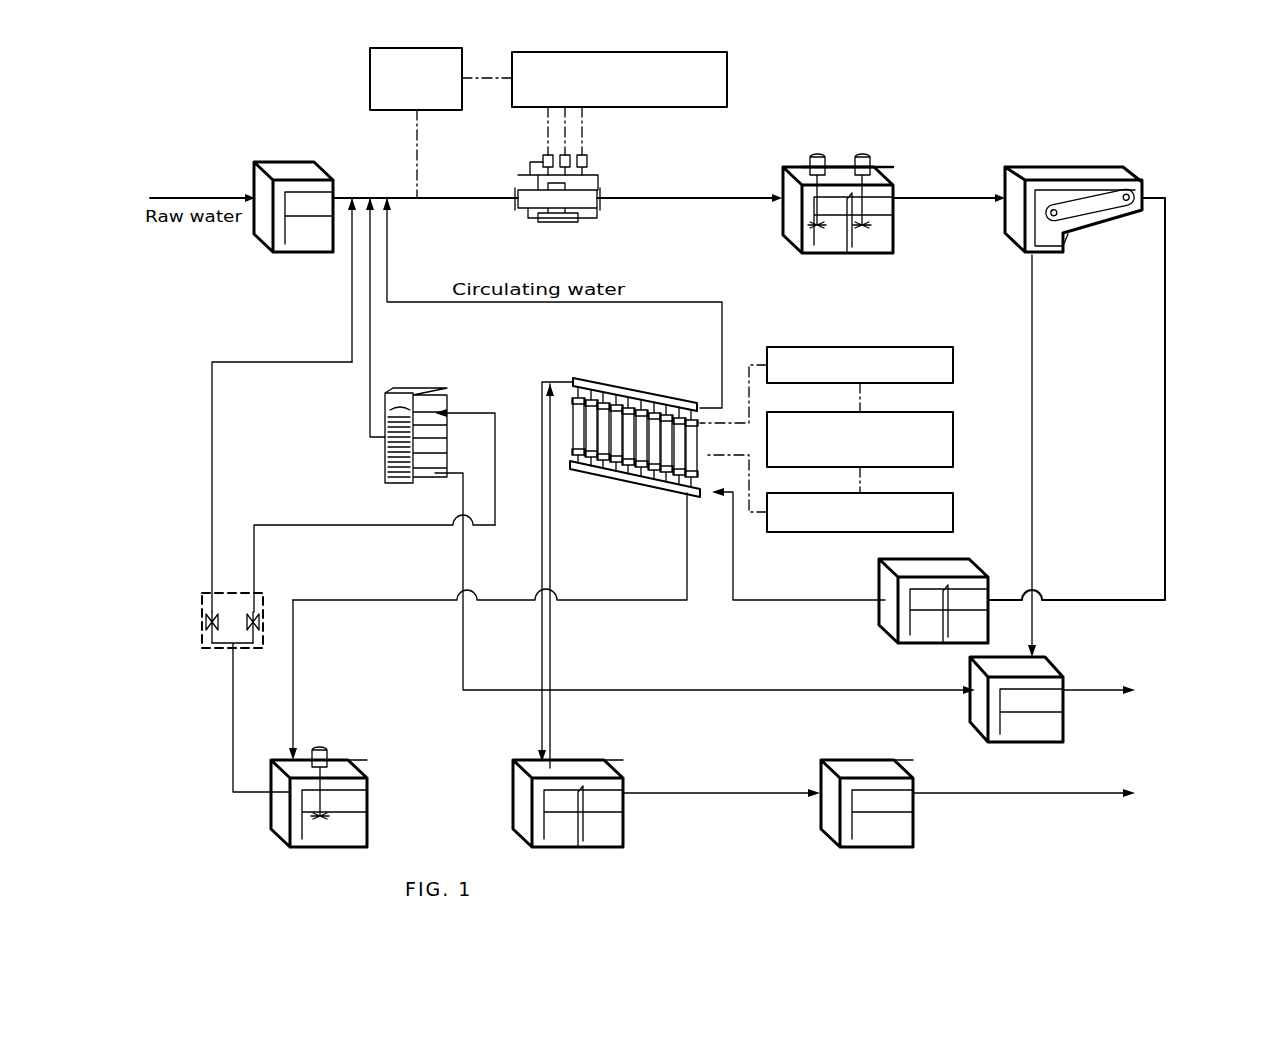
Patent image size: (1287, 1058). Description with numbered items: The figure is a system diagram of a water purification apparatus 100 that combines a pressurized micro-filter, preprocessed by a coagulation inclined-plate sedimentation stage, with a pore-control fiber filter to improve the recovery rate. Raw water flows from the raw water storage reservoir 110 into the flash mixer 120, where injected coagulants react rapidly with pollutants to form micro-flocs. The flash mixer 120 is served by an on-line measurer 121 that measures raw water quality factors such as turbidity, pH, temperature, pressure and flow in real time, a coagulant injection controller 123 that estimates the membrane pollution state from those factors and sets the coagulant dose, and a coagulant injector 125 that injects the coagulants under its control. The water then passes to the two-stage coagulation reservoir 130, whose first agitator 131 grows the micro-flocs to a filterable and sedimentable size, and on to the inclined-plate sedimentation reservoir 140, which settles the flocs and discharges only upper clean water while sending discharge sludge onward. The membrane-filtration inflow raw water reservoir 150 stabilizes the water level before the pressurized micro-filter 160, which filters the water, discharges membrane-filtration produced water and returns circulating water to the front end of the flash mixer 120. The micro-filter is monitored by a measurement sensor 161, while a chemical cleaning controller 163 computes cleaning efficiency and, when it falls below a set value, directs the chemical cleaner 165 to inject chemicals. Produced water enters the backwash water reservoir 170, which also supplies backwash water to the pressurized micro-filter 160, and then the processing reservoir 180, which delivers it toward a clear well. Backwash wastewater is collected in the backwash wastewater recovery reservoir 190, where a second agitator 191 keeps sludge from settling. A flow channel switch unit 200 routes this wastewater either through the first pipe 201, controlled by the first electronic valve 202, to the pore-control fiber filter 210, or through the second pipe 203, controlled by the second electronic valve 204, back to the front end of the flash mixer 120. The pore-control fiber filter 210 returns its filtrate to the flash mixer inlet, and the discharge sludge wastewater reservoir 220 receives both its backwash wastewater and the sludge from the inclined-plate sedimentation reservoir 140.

The water purification apparatus 100 is at (203, 97).
The raw water storage reservoir 110 is at (287, 172).
The flash mixer 120 is at (584, 193).
The on-line measurer 121 is at (370, 78).
The coagulant injection controller 123 is at (727, 78).
The coagulant injector 125 is at (588, 156).
The two-stage coagulation reservoir 130 is at (869, 180).
The first agitator 131 is at (860, 155).
The inclined-plate sedimentation reservoir 140 is at (1060, 166).
The membrane-filtration inflow raw water reservoir 150 is at (878, 578).
The pressurized micro-filter 160 is at (629, 384).
The measurement sensor 161 is at (953, 365).
The chemical cleaning controller 163 is at (953, 437).
The chemical cleaner 165 is at (953, 511).
The backwash water reservoir 170 is at (579, 760).
The processing reservoir 180 is at (859, 760).
The backwash wastewater recovery reservoir 190 is at (293, 723).
The second agitator 191 is at (320, 816).
The flow channel switch unit 200 is at (232, 682).
The first pipe 201 is at (294, 526).
The first electronic valve 202 is at (259, 613).
The second pipe 203 is at (212, 445).
The second electronic valve 204 is at (206, 613).
The pore-control fiber filter 210 is at (428, 391).
The discharge sludge wastewater reservoir 220 is at (1063, 712).